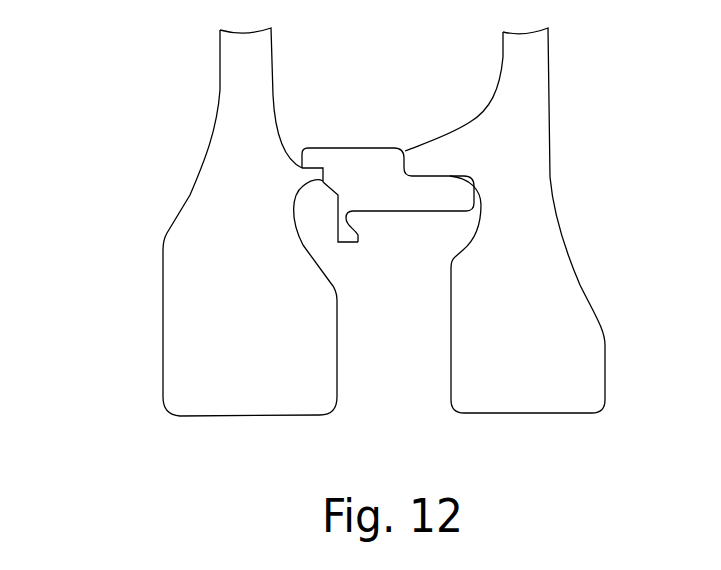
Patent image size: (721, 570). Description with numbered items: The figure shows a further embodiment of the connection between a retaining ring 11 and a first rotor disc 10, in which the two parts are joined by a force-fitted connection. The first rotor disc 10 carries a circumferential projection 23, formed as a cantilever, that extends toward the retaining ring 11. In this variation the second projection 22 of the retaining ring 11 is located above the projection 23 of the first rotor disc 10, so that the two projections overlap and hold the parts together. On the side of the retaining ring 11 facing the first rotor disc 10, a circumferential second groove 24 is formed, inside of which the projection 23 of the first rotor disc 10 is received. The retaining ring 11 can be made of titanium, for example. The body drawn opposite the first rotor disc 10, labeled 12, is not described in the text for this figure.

The first rotor disc 10 is at (188, 352).
The second body 12 is at (578, 360).
The retaining ring 11 is at (380, 173).
The second projection 22 is at (313, 162).
The projection 23 is at (300, 185).
The second groove 24 is at (325, 180).